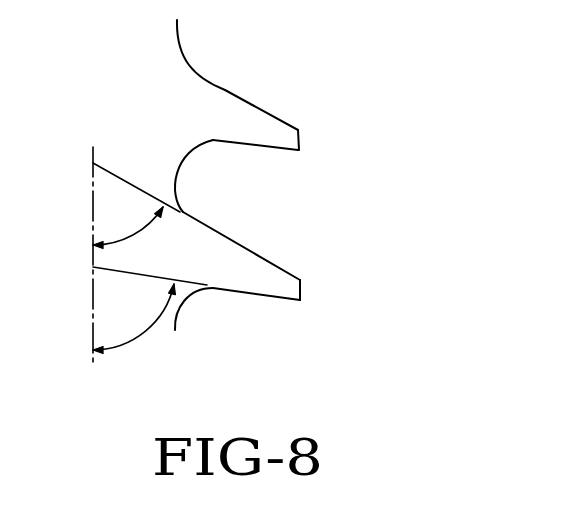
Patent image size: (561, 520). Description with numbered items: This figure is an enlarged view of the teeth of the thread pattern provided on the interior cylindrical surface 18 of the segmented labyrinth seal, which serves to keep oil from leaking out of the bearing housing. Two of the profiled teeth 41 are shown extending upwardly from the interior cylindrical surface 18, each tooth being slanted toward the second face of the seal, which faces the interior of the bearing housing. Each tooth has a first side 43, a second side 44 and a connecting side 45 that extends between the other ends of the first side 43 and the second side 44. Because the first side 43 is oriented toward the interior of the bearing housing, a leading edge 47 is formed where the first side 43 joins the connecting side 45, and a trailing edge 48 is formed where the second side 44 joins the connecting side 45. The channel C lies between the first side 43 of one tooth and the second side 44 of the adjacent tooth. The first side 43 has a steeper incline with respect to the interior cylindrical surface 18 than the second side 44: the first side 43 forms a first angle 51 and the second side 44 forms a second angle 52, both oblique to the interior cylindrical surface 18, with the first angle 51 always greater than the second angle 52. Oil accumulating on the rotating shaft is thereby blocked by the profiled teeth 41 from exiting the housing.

The interior cylindrical surface 18 is at (182, 157).
The profiled teeth 41 is at (316, 121).
The first side 43 is at (263, 150).
The second side 44 is at (222, 87).
The connecting side 45 is at (300, 140).
The leading edge 47 is at (299, 150).
The trailing edge 48 is at (298, 130).
The first angle 51 is at (145, 332).
The second angle 52 is at (133, 235).
The channel C is at (268, 216).